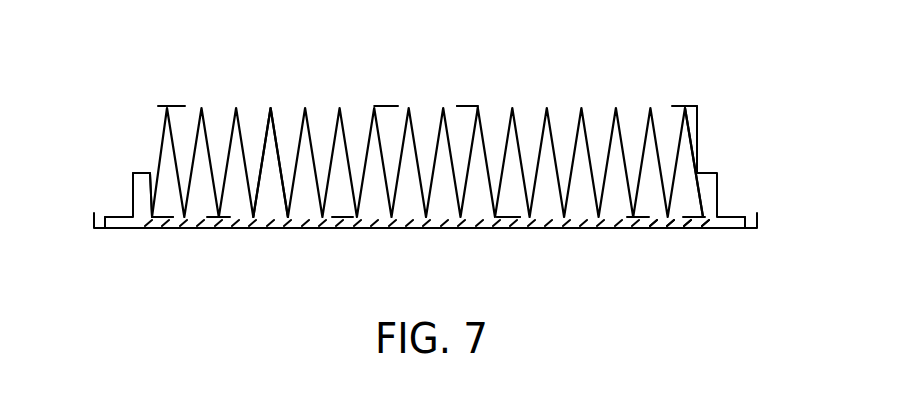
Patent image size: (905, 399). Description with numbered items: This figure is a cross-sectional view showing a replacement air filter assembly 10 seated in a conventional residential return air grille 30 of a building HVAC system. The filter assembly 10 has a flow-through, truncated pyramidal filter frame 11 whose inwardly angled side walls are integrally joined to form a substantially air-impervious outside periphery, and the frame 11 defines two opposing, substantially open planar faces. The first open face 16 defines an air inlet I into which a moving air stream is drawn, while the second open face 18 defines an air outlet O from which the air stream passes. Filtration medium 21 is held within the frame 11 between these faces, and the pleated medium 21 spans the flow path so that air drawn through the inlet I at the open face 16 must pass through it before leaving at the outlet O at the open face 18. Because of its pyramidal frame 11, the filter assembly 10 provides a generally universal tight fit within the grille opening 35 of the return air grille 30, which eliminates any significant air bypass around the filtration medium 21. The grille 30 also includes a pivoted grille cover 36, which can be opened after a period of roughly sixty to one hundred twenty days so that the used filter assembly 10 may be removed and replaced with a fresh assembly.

The filter assembly 10 is at (148, 108).
The filter frame 11 is at (692, 143).
The first open face 16 is at (228, 216).
The second open face 18 is at (392, 105).
The filtration medium 21 is at (262, 118).
The return air grille 30 is at (767, 217).
The grille opening 35 is at (145, 222).
The grille cover 36 is at (665, 229).
The air outlet O is at (493, 107).
The air inlet I is at (507, 232).